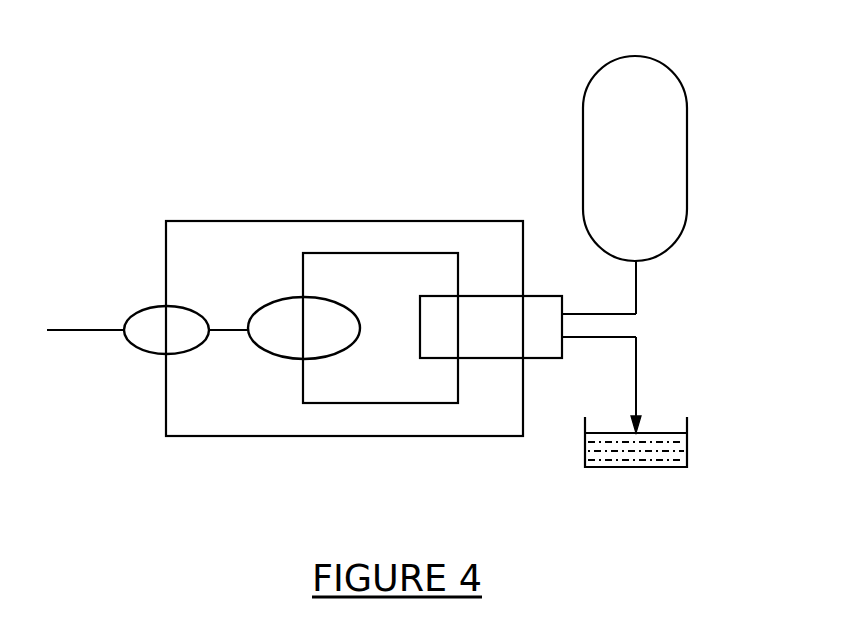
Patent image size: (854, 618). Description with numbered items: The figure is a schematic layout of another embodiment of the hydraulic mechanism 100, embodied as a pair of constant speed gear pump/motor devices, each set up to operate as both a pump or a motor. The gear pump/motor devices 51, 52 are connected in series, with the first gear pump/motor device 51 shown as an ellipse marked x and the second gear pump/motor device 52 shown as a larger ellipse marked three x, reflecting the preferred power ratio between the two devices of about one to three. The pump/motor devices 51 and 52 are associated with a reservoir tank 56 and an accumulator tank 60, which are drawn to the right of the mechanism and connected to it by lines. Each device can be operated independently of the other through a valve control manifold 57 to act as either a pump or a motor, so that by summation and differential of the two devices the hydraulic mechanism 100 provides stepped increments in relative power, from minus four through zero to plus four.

The hydraulic mechanism 100 is at (518, 60).
The gear pump/motor device 51 is at (145, 306).
The gear pump/motor device 52 is at (282, 298).
The reservoir tank 56 is at (688, 440).
The valve control manifold 57 is at (563, 327).
The accumulator tank 60 is at (688, 157).